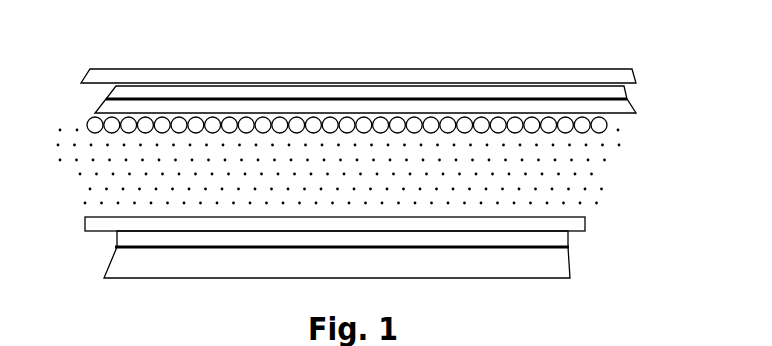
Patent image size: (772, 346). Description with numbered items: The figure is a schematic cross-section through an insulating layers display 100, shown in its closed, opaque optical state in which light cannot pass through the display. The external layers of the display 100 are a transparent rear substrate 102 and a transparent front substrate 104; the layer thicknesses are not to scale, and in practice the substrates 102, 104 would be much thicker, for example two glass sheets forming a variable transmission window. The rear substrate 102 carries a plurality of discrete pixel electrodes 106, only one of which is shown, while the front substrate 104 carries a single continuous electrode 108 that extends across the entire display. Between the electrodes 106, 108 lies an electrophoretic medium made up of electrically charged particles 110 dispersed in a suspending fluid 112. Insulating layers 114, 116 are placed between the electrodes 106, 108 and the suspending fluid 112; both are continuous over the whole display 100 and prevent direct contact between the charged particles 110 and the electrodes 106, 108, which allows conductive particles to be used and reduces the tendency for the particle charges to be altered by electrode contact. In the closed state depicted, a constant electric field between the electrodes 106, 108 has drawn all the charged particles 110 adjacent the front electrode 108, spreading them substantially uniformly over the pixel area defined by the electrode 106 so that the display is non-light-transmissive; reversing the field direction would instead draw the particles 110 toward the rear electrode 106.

The insulating layers display 100 is at (697, 150).
The rear substrate 102 is at (570, 257).
The front substrate 104 is at (132, 77).
The pixel electrode 106 is at (540, 238).
The continuous electrode 108 is at (368, 92).
The electrically charged particles 110 is at (232, 118).
The suspending fluid 112 is at (457, 179).
The insulating layer 114 is at (105, 225).
The insulating layer 116 is at (300, 108).